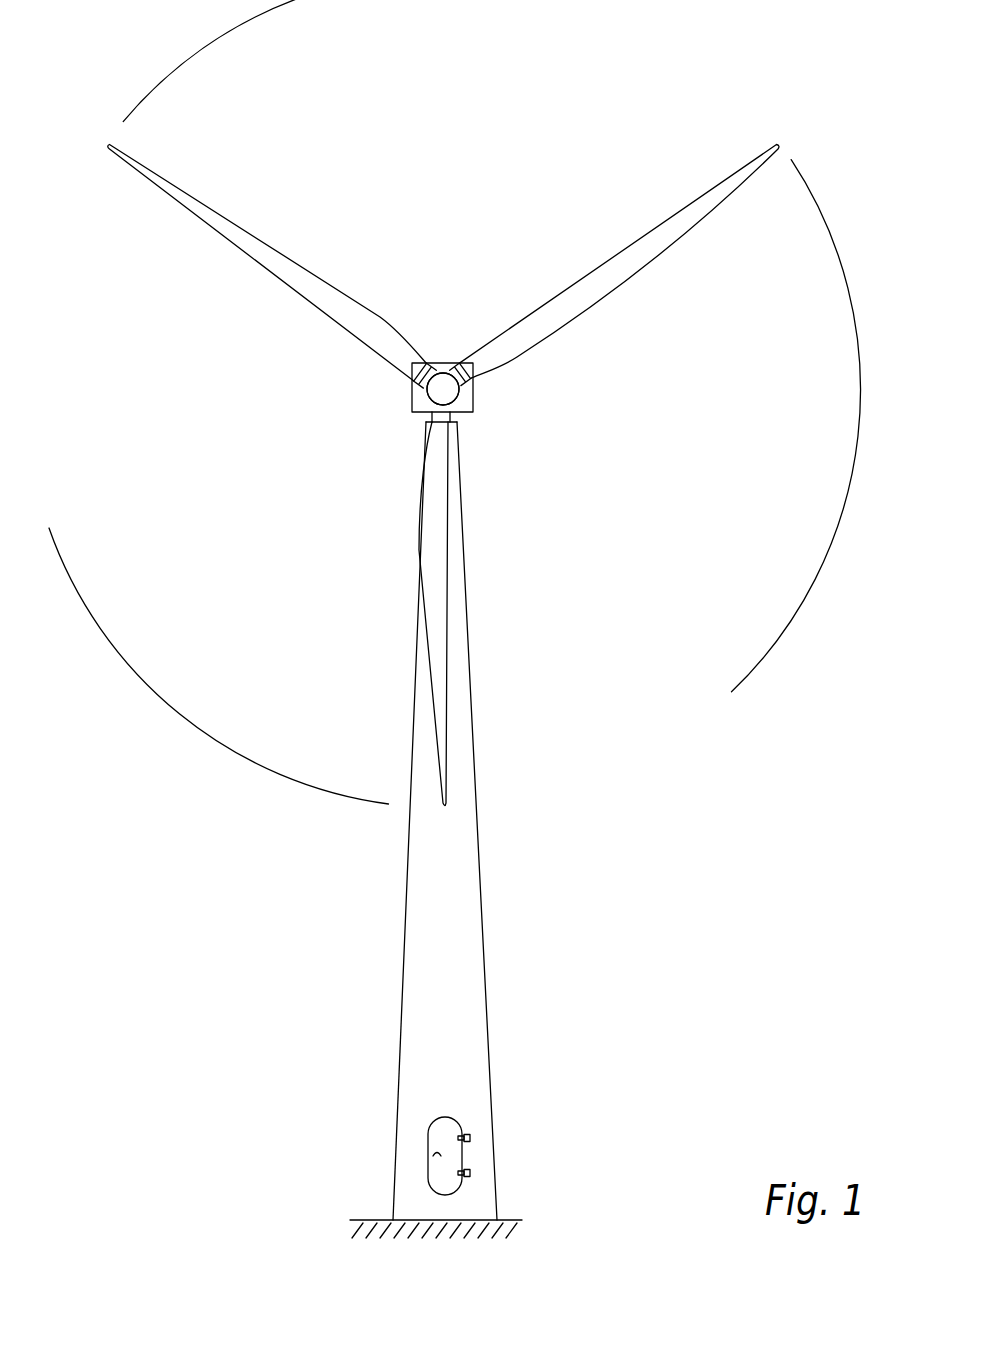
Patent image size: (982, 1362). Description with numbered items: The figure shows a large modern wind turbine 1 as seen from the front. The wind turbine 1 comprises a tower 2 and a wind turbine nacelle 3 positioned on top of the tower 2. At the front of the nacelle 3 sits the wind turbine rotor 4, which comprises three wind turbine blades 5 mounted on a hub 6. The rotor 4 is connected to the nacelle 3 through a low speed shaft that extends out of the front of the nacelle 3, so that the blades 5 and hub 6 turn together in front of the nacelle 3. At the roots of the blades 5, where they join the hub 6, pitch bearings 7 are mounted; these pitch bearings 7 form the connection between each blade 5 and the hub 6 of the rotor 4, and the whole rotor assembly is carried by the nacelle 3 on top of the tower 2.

The wind turbine 1 is at (390, 1043).
The tower 2 is at (473, 902).
The wind turbine nacelle 3 is at (473, 410).
The wind turbine rotor 4 is at (428, 395).
The wind turbine blades 5 is at (443, 650).
The hub 6 is at (445, 390).
The pitch bearings 7 is at (460, 363).